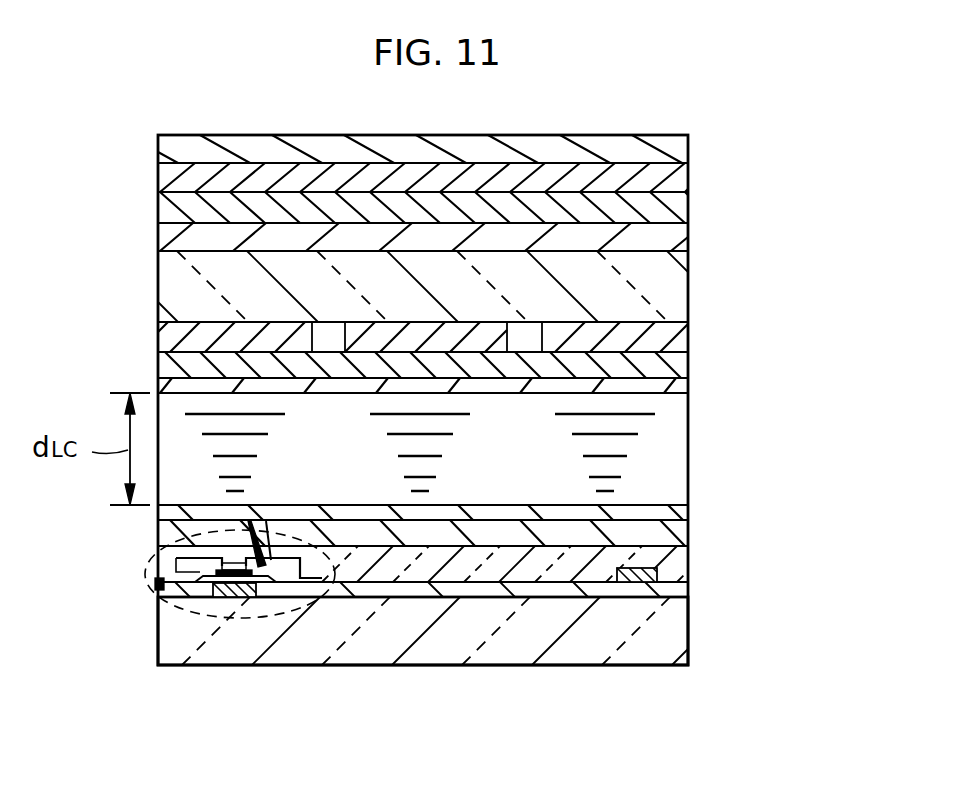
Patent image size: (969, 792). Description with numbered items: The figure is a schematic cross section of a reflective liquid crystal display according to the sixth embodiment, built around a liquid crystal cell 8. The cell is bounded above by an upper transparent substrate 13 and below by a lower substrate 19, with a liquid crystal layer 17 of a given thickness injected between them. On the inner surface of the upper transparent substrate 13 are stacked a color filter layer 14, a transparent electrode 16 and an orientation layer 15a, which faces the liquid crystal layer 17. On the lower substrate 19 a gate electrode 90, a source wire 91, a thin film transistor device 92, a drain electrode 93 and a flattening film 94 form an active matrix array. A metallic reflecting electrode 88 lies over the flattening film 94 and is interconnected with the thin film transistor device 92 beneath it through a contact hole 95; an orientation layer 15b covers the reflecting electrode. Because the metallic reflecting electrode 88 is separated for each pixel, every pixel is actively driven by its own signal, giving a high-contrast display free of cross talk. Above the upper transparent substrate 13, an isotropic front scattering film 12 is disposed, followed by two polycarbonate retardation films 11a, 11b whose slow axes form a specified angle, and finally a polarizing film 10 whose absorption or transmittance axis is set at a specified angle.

The liquid crystal cell 8 is at (830, 285).
The polarizing film 10 is at (690, 150).
The retardation film 11a is at (690, 172).
The retardation film 11b is at (690, 210).
The scattering film 12 is at (690, 237).
The upper transparent substrate 13 is at (690, 292).
The color filter layer 14 is at (690, 337).
The transparent electrode 16 is at (690, 360).
The orientation layer 15a is at (690, 385).
The liquid crystal layer 17 is at (690, 455).
The orientation layer 15b is at (690, 505).
The metallic reflecting electrode 88 is at (690, 530).
The flattening film 94 is at (690, 572).
The lower substrate 19 is at (690, 622).
The gate electrode 90 is at (213, 602).
The source wire 91 is at (620, 585).
The thin film transistor device 92 is at (245, 617).
The drain electrode 93 is at (307, 585).
The contact hole 95 is at (240, 523).